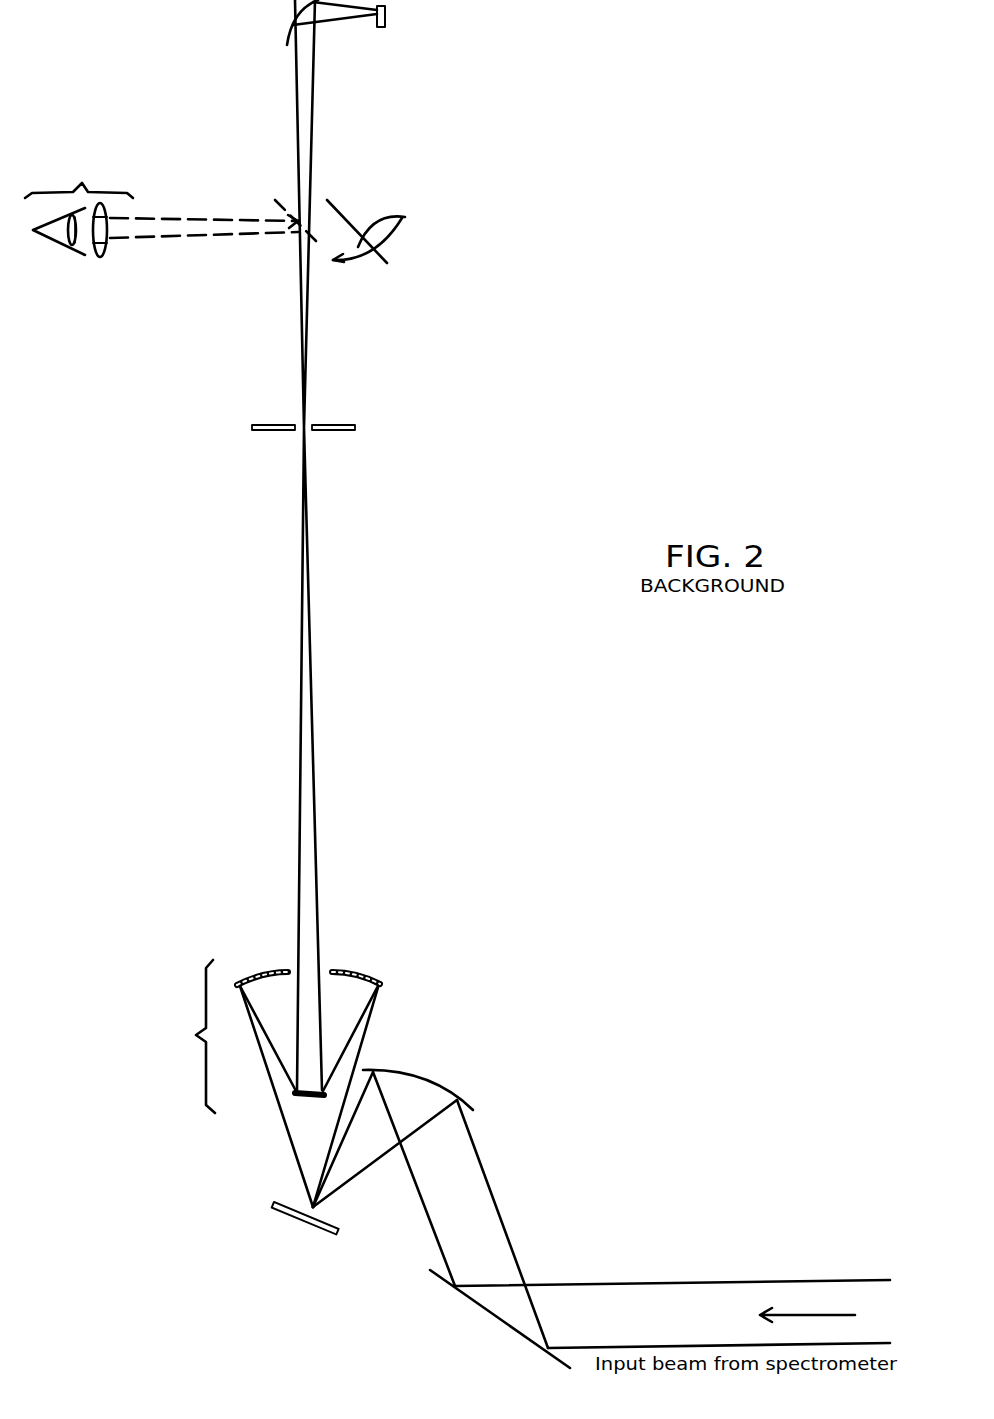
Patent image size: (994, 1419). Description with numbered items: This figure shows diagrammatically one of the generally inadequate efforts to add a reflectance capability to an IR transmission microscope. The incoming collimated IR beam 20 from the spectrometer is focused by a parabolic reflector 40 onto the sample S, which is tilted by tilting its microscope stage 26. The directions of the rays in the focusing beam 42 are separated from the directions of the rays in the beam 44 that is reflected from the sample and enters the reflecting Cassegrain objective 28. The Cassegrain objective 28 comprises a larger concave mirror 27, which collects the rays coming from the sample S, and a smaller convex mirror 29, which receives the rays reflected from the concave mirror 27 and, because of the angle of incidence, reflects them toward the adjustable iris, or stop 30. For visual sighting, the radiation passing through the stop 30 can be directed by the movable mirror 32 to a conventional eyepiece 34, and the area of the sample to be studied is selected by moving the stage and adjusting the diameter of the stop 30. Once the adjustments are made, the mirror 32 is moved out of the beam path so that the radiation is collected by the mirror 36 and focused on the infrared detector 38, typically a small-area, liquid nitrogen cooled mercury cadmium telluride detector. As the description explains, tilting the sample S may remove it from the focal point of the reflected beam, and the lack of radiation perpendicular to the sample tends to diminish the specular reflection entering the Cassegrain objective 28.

The beam 20 is at (645, 1283).
The microscope stage 26 is at (320, 1232).
The concave mirror 27 is at (352, 975).
The reflecting Cassegrain objective 28 is at (183, 1036).
The convex mirror 29 is at (300, 1100).
The adjustable iris, or stop 30 is at (313, 426).
The movable mirror 32 is at (354, 231).
The eyepiece 34 is at (161, 206).
The mirror 36 is at (290, 33).
The infrared detector 38 is at (386, 22).
The parabolic reflector 40 is at (410, 1075).
The focusing beam 42 is at (383, 1157).
The beam 44 is at (288, 1147).
The sample S is at (318, 1208).